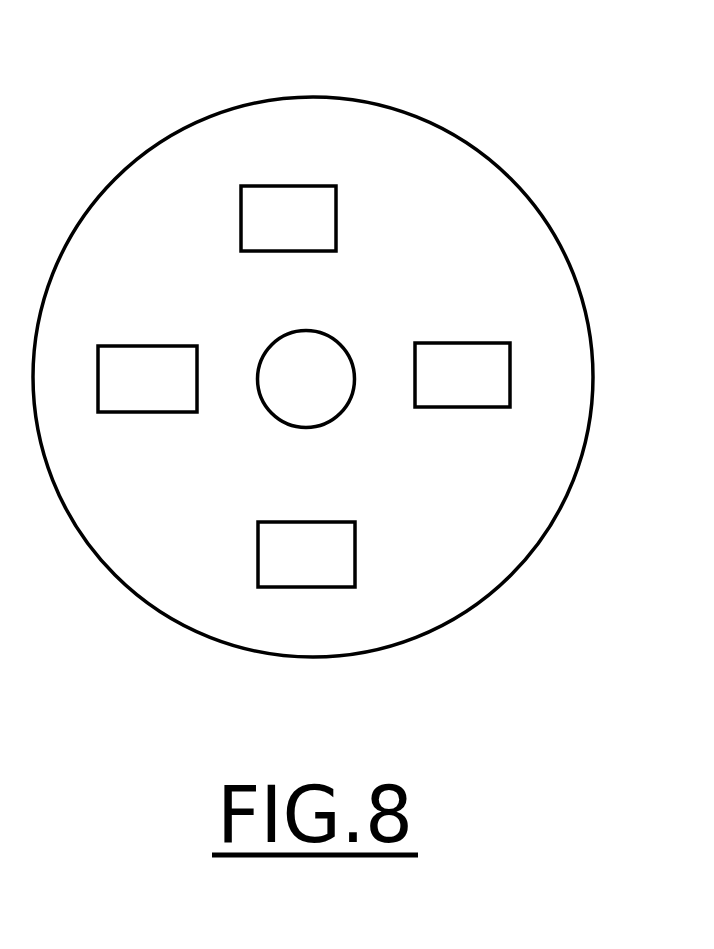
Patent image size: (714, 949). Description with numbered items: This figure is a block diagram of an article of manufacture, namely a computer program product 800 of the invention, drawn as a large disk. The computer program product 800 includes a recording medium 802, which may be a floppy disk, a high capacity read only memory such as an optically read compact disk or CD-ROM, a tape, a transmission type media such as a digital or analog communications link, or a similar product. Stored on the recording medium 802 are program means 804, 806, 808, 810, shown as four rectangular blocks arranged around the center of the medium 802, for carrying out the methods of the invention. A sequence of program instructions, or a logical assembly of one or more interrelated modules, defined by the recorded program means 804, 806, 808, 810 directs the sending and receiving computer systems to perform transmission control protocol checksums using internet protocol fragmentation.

The computer program product 800 is at (293, 52).
The recording medium 802 is at (533, 277).
The program means 804 is at (462, 375).
The program means 806 is at (147, 379).
The program means 808 is at (306, 554).
The program means 810 is at (288, 218).